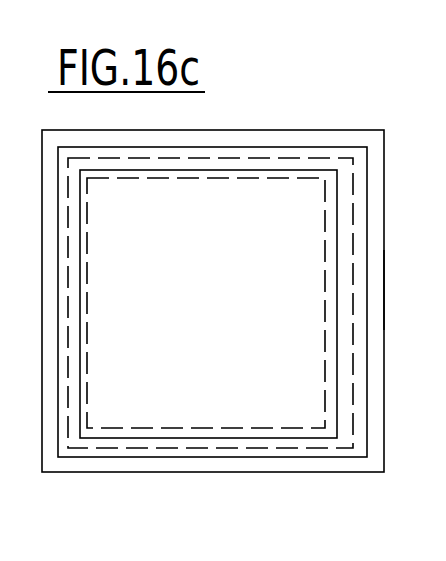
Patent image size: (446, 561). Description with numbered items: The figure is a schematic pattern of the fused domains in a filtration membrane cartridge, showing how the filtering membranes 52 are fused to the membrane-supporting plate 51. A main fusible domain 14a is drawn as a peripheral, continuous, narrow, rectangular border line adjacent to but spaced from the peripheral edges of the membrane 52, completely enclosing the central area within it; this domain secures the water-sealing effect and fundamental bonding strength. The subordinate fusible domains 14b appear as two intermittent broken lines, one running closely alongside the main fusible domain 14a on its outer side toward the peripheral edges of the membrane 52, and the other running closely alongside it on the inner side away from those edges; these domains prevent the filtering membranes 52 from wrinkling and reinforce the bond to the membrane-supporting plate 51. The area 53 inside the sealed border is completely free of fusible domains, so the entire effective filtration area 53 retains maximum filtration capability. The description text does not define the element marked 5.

The substrate 5 is at (308, 130).
The membrane-supporting plate 51 is at (385, 289).
The filtering membranes 52 is at (367, 168).
The main fusible domain 14a is at (336, 230).
The subordinate fusible domains 14b is at (327, 402).
The effective filtration area 53 is at (210, 402).